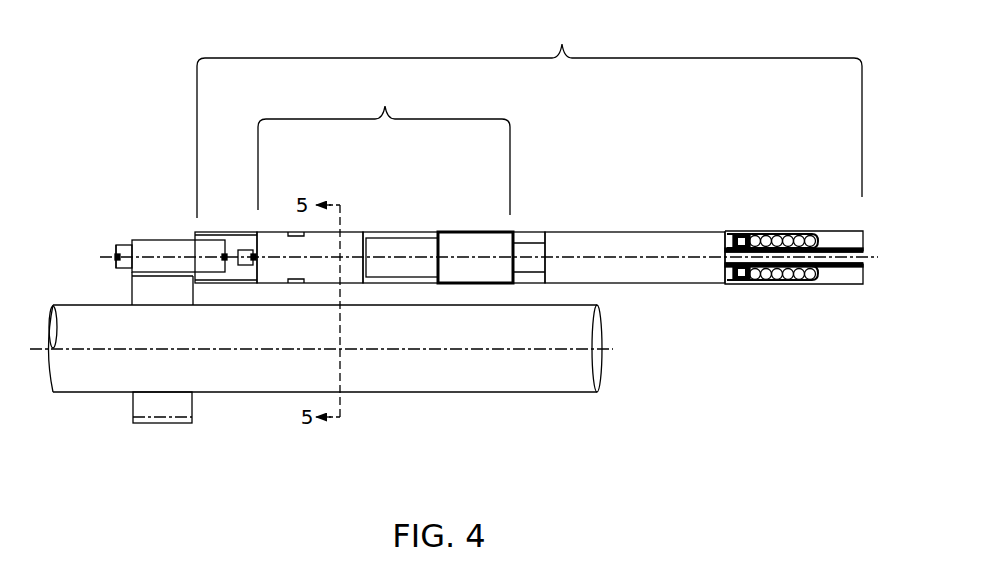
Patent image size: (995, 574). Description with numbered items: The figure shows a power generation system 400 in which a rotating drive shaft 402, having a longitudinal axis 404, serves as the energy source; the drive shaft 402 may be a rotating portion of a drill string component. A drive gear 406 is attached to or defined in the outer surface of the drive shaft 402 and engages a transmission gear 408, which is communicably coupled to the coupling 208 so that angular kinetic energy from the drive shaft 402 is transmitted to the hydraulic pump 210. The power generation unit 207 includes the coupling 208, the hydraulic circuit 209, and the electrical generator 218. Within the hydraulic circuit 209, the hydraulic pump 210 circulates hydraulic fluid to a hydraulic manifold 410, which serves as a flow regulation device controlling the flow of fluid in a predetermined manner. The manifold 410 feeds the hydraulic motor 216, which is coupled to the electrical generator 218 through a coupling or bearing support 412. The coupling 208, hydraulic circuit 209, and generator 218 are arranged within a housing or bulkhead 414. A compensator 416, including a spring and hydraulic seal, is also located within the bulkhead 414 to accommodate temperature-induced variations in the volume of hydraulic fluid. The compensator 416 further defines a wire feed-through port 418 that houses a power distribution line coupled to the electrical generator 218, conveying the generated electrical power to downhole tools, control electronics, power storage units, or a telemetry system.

The power generation system 400 is at (137, 92).
The power generation unit 207 is at (529, 113).
The coupling 208 is at (222, 225).
The hydraulic circuit 209 is at (384, 144).
The hydraulic pump 210 is at (273, 225).
The hydraulic motor 216 is at (448, 228).
The electrical generator 218 is at (613, 228).
The drive shaft 402 is at (232, 394).
The longitudinal axis 404 is at (427, 349).
The drive gear 406 is at (170, 425).
The transmission gear 408 is at (152, 235).
The hydraulic manifold 410 is at (378, 228).
The bearing support 412 is at (523, 228).
The bulkhead 414 is at (858, 228).
The compensator 416 is at (748, 228).
The wire feed-through port 418 is at (785, 262).